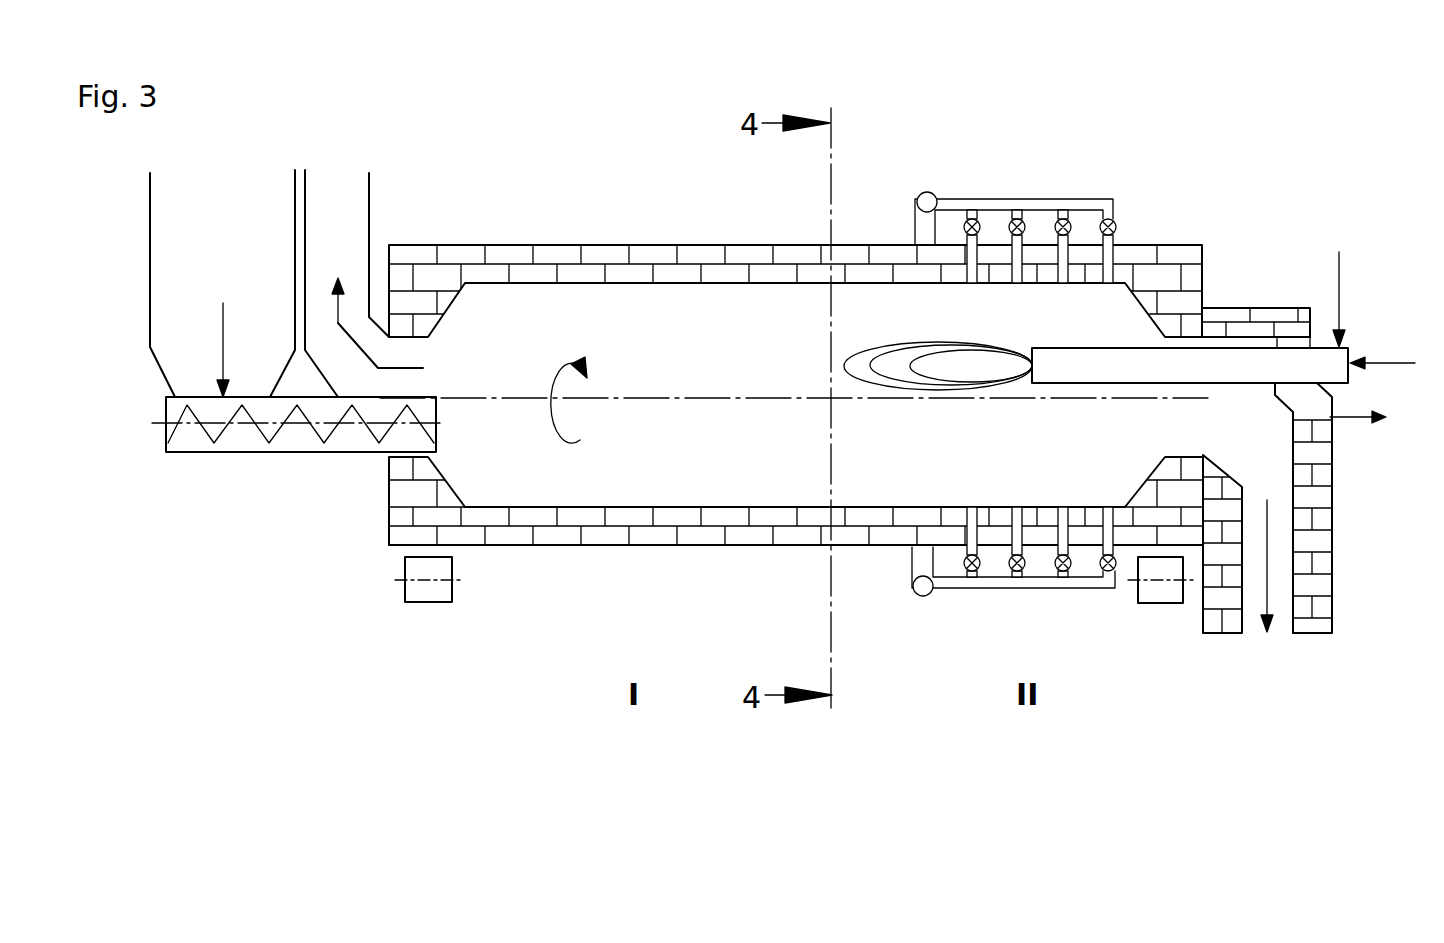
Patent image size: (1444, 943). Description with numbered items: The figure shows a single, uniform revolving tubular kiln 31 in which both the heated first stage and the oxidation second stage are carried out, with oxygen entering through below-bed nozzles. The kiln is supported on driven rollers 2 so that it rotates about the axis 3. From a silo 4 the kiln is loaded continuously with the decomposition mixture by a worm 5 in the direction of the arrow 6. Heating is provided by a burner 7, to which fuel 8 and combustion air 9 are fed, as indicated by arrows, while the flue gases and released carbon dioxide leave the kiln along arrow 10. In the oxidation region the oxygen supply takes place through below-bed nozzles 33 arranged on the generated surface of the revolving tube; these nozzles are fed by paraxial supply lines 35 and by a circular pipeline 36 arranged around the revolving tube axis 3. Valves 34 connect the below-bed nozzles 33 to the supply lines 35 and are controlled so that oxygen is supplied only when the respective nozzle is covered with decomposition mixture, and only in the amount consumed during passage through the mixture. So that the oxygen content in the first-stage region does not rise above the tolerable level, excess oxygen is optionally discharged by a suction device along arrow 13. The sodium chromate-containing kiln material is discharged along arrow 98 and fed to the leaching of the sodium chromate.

The driven rollers 2 is at (430, 605).
The axis 3 is at (794, 428).
The silo 4 is at (150, 328).
The worm 5 is at (285, 453).
The arrow 6 is at (223, 342).
The burner 7 is at (1125, 370).
The fuel 8 is at (1392, 363).
The combustion air 9 is at (1341, 264).
The arrow 10 is at (377, 281).
The arrow 13 is at (1380, 414).
The uniform revolving tubular kiln 31 is at (695, 548).
The below-bed nozzles 33 is at (972, 285).
The valves 34 is at (1104, 221).
The paraxial supply lines 35 is at (985, 199).
The circular pipeline 36 is at (920, 195).
The arrow 98 is at (1268, 538).